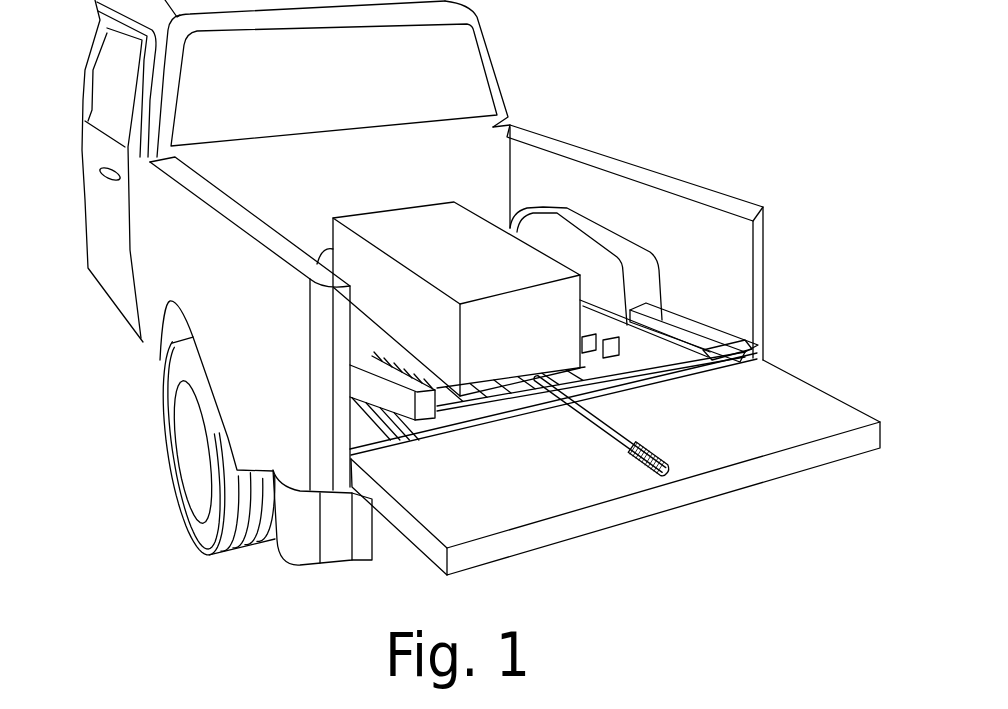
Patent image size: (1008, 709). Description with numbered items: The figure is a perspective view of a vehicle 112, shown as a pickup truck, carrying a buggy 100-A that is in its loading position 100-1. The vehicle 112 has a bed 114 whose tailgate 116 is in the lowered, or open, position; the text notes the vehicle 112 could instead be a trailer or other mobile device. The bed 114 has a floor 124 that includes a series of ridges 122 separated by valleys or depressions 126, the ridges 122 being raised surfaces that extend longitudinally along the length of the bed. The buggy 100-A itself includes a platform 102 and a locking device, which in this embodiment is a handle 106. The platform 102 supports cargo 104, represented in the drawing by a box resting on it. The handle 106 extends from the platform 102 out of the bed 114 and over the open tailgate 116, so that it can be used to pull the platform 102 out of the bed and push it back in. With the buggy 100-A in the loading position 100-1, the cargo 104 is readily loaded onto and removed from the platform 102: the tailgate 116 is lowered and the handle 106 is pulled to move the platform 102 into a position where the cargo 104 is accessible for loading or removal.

The loading position 100-1 is at (608, 492).
The buggy 100-A is at (617, 442).
The platform 102 is at (437, 437).
The cargo 104 is at (540, 342).
The handle 106 is at (612, 422).
The vehicle 112 is at (499, 76).
The bed 114 is at (765, 282).
The tailgate 116 is at (772, 482).
The ridges 122 is at (660, 318).
The floor 124 is at (713, 357).
The valleys or depressions 126 is at (693, 352).